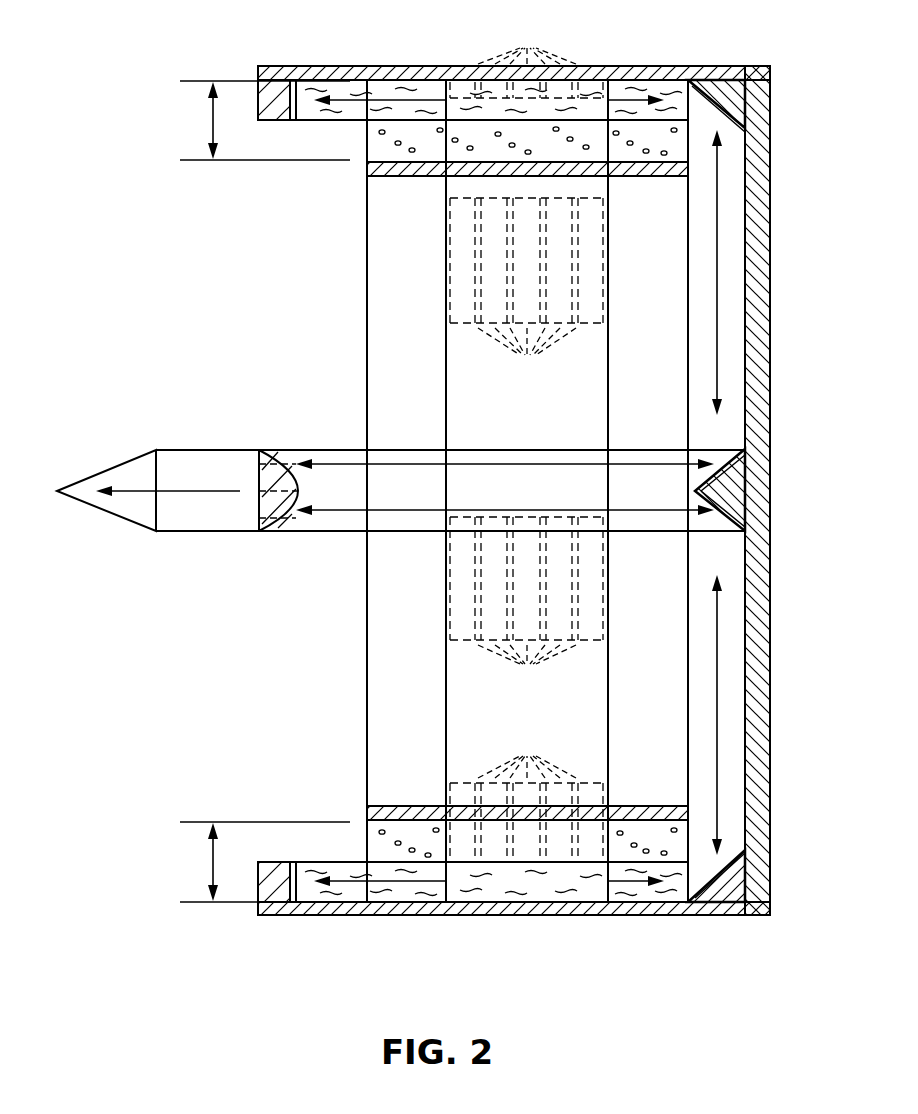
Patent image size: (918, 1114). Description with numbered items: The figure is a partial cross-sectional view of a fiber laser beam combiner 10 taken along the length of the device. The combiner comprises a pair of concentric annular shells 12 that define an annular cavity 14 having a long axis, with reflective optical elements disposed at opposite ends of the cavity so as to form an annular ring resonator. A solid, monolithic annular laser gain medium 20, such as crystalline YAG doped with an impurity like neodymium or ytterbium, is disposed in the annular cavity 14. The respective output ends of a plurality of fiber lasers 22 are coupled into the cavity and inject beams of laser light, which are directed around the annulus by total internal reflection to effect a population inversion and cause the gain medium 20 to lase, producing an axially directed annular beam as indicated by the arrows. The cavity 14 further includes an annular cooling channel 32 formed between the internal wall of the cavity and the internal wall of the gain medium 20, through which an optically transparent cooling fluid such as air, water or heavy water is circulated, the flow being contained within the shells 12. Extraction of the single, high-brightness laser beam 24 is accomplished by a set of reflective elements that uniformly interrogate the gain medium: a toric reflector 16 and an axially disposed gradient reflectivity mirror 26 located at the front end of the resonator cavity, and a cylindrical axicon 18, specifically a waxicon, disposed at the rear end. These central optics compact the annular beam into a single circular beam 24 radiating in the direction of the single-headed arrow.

The fiber laser beam combiner 10 is at (230, 621).
The concentric annular shells 12 is at (593, 72).
The annular cavity 14 is at (208, 125).
The toric reflector 16 is at (270, 78).
The axicon 18 is at (733, 79).
The annular laser gain medium 20 is at (330, 78).
The fiber lasers 22 is at (526, 438).
The laser beam 24 is at (202, 465).
The gradient reflectivity mirror 26 is at (276, 464).
The cooling channel 32 is at (674, 150).